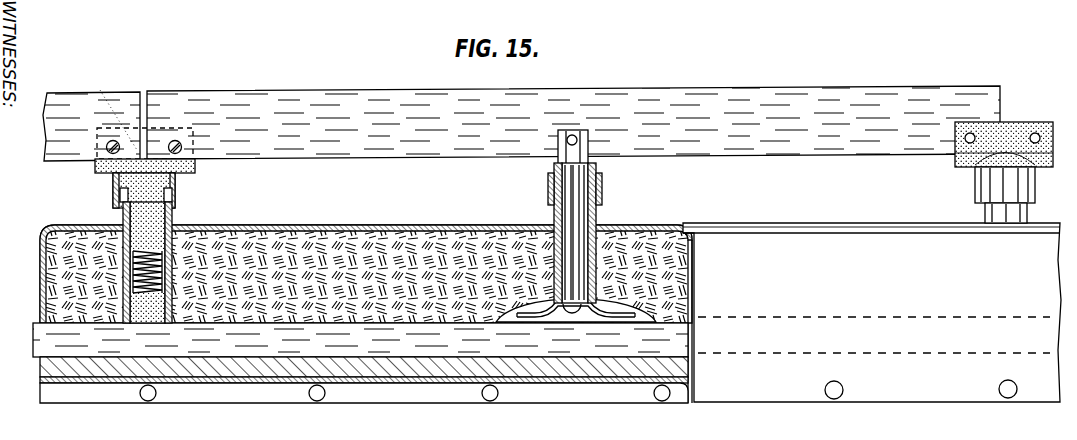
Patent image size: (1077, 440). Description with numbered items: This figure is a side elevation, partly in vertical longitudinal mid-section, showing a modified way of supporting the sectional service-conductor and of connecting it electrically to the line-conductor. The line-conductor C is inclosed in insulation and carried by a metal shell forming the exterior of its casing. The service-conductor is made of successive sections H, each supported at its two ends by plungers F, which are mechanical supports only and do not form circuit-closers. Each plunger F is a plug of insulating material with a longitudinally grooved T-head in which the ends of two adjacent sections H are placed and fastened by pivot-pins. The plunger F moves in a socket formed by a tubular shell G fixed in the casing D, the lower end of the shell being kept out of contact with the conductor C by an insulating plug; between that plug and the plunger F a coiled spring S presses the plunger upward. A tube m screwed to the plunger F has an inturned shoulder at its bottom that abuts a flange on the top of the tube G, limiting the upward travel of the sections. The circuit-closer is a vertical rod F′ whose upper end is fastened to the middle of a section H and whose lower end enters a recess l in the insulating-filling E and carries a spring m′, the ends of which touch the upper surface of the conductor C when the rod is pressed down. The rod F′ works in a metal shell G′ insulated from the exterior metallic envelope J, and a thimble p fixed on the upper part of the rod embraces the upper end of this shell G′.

The section of sectional service-conductor H is at (86, 95).
The plunger F is at (116, 195).
The tube m is at (173, 198).
The tubular shell G is at (173, 223).
The coiled spring S is at (163, 270).
The insulating-filling E is at (366, 314).
The line-conductor C is at (36, 330).
The lower rail J′ is at (577, 382).
The casing D is at (872, 312).
The exterior metallic envelope J is at (874, 329).
The vertical rod or plunger F′ is at (555, 204).
The thimble p is at (548, 183).
The case or shell G′ is at (598, 218).
The spring m′ is at (546, 318).
The recess l is at (594, 306).